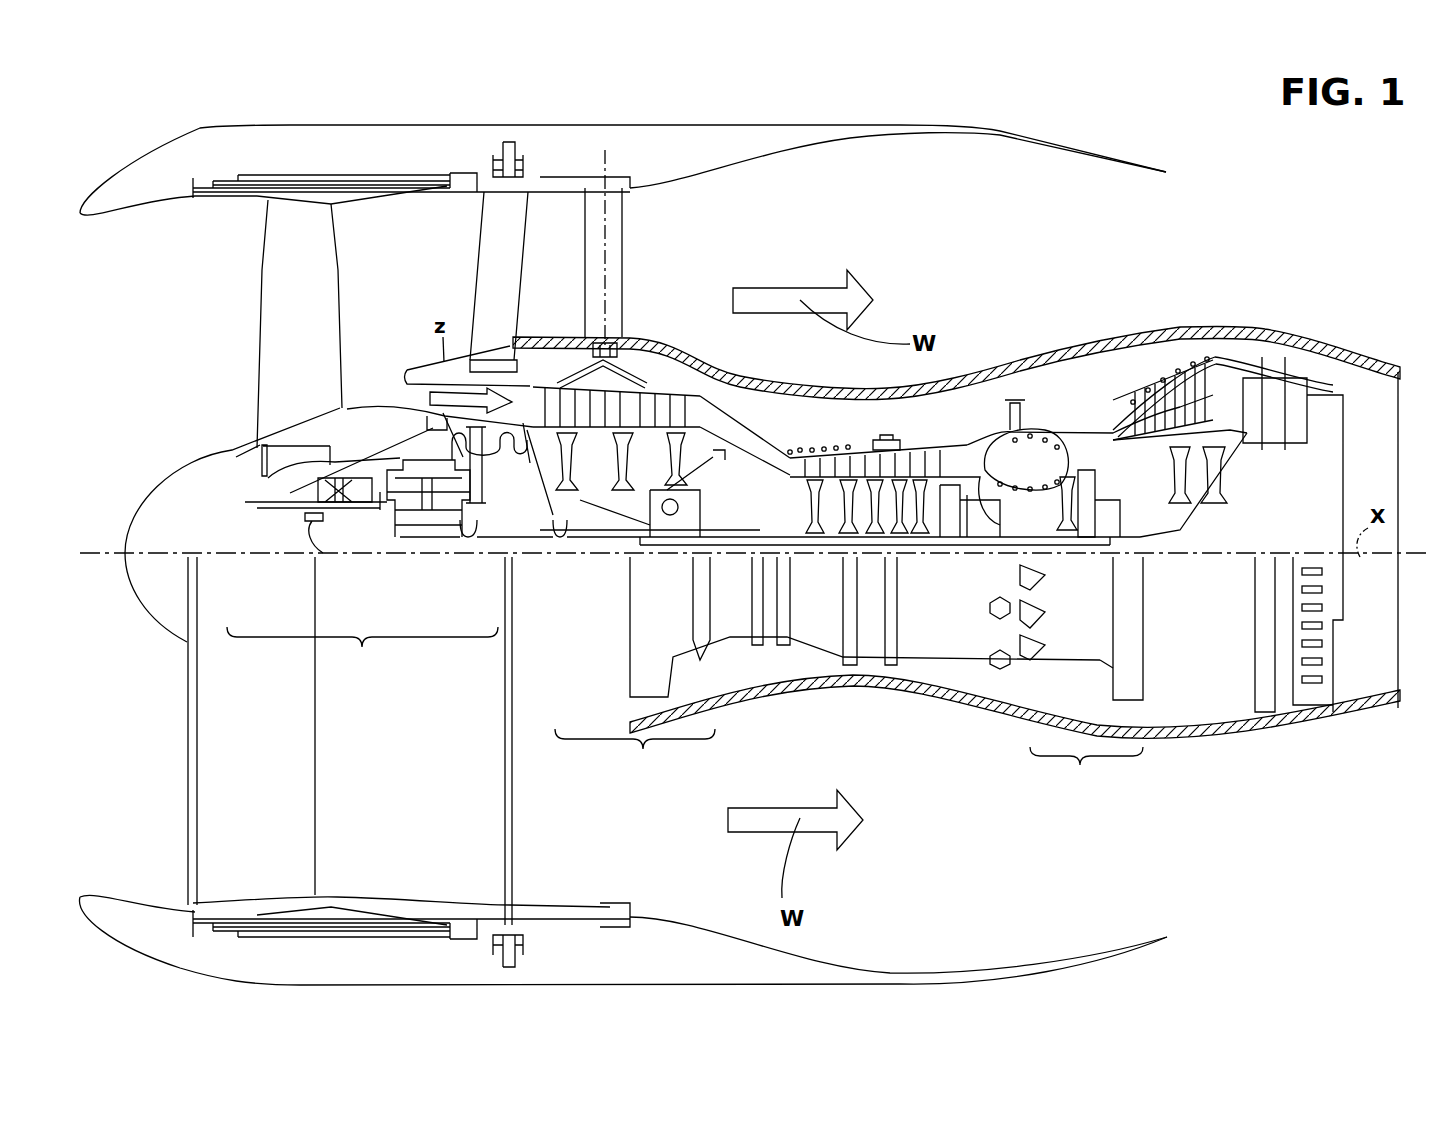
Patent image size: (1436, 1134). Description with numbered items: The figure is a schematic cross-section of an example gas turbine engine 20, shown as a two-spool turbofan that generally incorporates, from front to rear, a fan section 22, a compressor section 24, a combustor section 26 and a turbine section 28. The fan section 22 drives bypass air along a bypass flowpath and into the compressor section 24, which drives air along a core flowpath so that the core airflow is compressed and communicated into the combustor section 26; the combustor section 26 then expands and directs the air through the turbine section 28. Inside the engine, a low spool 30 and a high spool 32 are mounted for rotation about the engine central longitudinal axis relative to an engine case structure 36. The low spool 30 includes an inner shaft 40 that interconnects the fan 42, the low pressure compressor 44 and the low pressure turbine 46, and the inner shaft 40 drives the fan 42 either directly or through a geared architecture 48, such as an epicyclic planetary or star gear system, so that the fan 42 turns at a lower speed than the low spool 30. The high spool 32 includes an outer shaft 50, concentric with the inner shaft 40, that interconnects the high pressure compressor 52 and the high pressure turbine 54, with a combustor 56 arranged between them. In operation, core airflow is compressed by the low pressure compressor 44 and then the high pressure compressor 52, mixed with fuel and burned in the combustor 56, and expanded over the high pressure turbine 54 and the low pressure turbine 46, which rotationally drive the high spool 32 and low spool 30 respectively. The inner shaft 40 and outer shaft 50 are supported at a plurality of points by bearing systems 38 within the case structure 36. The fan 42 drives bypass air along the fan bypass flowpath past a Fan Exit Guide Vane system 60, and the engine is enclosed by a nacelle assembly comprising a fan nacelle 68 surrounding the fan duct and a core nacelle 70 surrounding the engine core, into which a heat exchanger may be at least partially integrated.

The gas turbine engine 20 is at (1210, 218).
The fan section 22 is at (465, 120).
The compressor section 24 is at (903, 257).
The combustor section 26 is at (1025, 257).
The turbine section 28 is at (1272, 257).
The low spool 30 is at (712, 512).
The high spool 32 is at (933, 512).
The engine case structure 36 is at (870, 660).
The bearing systems 38 is at (685, 711).
The inner shaft 40 is at (1053, 538).
The fan 42 is at (314, 344).
The low pressure compressor 44 is at (660, 410).
The low pressure turbine 46 is at (1190, 410).
The geared architecture 48 is at (423, 512).
The outer shaft 50 is at (1060, 555).
The high pressure compressor 52 is at (798, 468).
The high pressure turbine 54 is at (1092, 452).
The combustor 56 is at (1025, 467).
The Fan Exit Guide Vane system 60 is at (485, 300).
The fan nacelle 68 is at (740, 128).
The core nacelle 70 is at (1303, 290).